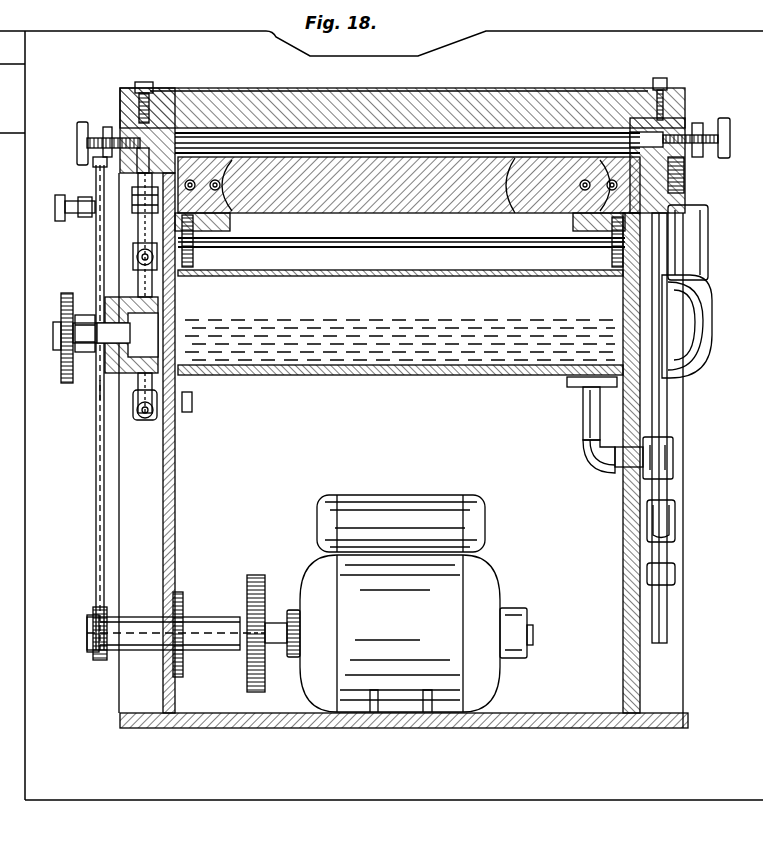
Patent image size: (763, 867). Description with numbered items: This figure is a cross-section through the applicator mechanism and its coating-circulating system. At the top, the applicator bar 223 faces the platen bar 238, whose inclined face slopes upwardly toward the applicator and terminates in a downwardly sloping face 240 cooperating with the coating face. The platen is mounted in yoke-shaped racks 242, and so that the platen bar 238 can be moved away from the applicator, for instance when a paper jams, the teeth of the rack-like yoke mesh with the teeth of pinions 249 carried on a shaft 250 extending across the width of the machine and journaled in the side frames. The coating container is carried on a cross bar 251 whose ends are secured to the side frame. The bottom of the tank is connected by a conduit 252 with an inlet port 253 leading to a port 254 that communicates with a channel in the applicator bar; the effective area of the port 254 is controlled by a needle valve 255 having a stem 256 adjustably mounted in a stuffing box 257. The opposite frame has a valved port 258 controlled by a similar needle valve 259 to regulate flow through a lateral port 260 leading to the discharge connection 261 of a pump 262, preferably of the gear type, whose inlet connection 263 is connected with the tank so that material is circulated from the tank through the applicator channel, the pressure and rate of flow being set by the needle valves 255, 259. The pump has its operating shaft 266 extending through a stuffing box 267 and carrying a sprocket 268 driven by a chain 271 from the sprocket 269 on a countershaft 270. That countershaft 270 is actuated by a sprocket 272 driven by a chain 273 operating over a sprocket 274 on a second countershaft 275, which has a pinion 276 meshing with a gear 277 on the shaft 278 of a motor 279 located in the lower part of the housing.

The applicator bar 223 is at (15, 269).
The platen bar 238 is at (470, 216).
The downwardly sloping face 240 is at (502, 205).
The yoke-shaped rack 242 is at (231, 225).
The pinion 249 is at (196, 265).
The shaft 250 is at (404, 247).
The cross bar 251 is at (450, 376).
The conduit 252 is at (585, 425).
The inlet port 253 is at (686, 176).
The port 254 is at (677, 100).
The needle valve 255 is at (722, 123).
The valve stem 256 is at (693, 132).
The stuffing box 257 is at (690, 158).
The valved port 258 is at (118, 116).
The needle valve 259 is at (98, 130).
The lateral port 260 is at (137, 152).
The discharge connection 261 is at (400, 315).
The pump 262 is at (133, 412).
The inlet connection 263 is at (183, 377).
The operating shaft 266 is at (100, 385).
The stuffing box 267 is at (80, 355).
The sprocket 268 is at (64, 372).
The sprocket 269 is at (58, 214).
The countershaft 270 is at (72, 250).
The chain 271 is at (70, 287).
The sprocket 272 is at (97, 173).
The chain 273 is at (95, 537).
The sprocket 274 is at (98, 655).
The countershaft 275 is at (206, 642).
The pinion 276 is at (270, 560).
The gear 277 is at (268, 650).
The motor shaft 278 is at (277, 622).
The motor 279 is at (467, 575).